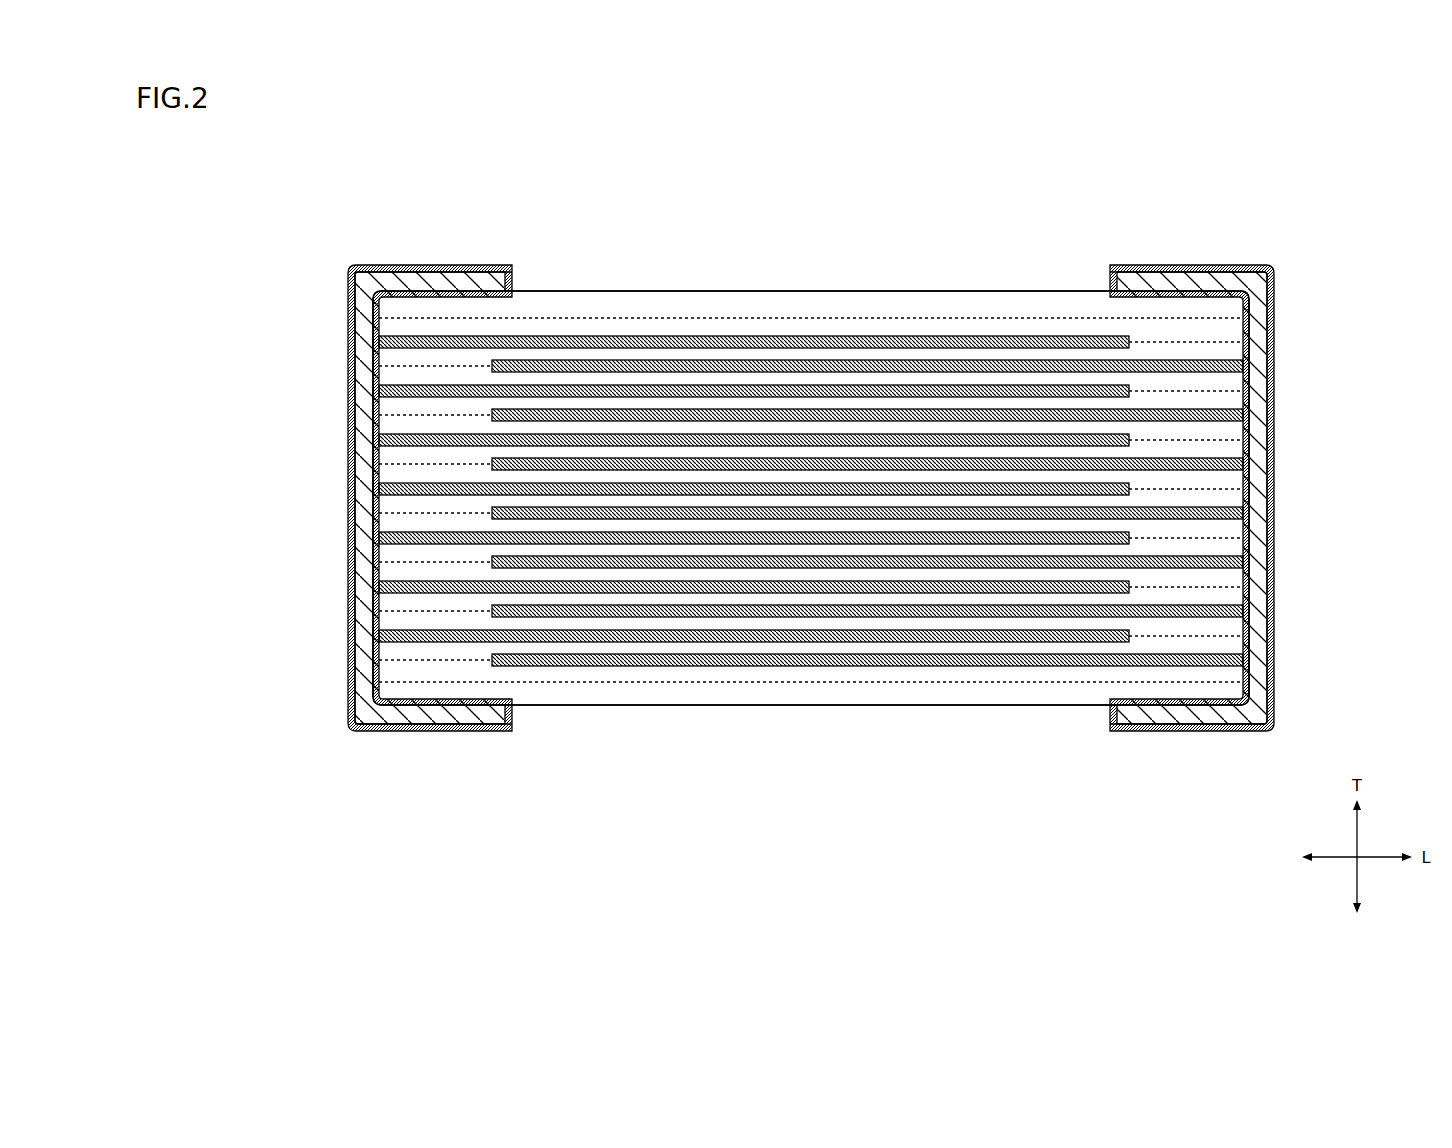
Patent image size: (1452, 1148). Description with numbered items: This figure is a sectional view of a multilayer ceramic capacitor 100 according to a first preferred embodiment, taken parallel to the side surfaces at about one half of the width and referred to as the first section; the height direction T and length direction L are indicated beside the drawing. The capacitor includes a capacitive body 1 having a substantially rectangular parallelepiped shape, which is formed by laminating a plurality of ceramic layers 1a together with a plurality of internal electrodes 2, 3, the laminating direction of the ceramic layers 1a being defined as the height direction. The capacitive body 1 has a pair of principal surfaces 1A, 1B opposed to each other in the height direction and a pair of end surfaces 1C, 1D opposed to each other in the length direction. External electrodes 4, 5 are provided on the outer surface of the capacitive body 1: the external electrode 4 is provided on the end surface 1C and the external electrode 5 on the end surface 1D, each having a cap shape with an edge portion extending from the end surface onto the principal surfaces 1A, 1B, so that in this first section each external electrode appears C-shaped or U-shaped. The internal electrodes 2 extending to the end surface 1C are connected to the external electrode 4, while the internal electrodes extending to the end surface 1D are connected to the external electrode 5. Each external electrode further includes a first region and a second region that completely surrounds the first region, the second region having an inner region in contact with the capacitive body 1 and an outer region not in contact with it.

The multilayer ceramic capacitor 100 is at (265, 127).
The capacitive body 1 is at (542, 303).
The ceramic layer 1a is at (590, 307).
The principal surface 1A is at (867, 722).
The principal surface 1B is at (853, 282).
The end surface 1C is at (332, 480).
The end surface 1D is at (1292, 475).
The internal electrode 2 is at (887, 340).
The internal electrode 3 is at (918, 363).
The external electrode 4 is at (376, 452).
The external electrode 5 is at (1246, 456).